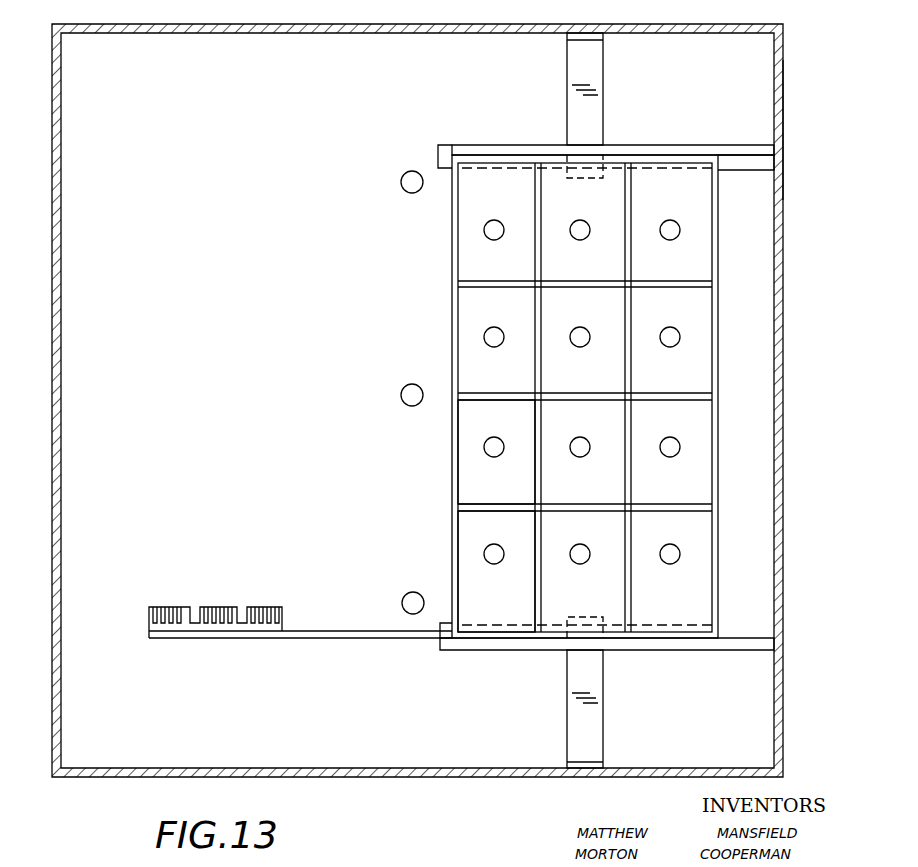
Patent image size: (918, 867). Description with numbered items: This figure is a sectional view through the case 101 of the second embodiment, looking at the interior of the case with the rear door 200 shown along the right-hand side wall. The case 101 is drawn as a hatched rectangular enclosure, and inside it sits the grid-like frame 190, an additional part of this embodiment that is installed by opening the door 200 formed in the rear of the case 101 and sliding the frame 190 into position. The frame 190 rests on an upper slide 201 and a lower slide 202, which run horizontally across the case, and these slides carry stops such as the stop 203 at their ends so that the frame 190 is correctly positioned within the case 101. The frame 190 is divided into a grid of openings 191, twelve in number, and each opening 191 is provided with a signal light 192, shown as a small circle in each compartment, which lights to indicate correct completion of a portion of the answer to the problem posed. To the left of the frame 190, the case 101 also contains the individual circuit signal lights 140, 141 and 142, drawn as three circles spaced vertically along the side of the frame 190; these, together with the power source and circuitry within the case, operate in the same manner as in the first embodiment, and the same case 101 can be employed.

The case 101 is at (56, 290).
The individual circuit signal light 140 is at (407, 188).
The individual circuit signal light 141 is at (406, 399).
The individual circuit signal light 142 is at (404, 600).
The grid-like frame 190 is at (449, 279).
The openings 191 is at (473, 527).
The signal light 192 is at (672, 346).
The door 200 is at (785, 133).
The slide 201 is at (511, 145).
The slide 202 is at (478, 650).
The stop 203 is at (437, 155).